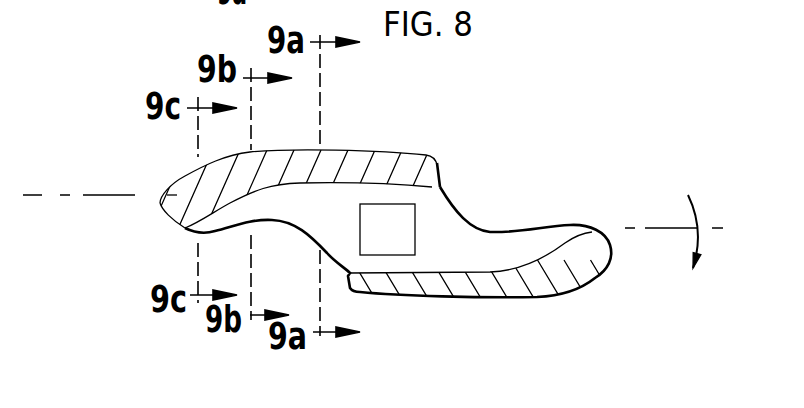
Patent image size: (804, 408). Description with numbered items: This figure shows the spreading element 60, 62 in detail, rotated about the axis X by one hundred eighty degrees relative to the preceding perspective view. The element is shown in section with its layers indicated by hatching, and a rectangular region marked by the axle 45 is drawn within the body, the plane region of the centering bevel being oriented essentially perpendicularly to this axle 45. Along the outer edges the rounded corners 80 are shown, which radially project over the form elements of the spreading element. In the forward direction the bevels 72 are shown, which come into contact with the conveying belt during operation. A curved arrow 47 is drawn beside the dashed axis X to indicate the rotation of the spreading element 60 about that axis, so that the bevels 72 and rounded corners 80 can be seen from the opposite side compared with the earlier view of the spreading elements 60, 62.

The axle 45 is at (398, 225).
The rotation arrow about axis X 47 is at (697, 208).
The spreading element 60 is at (364, 248).
The spreading element 62 is at (180, 163).
The bevels 72 is at (175, 195).
The rounded corners 80 is at (162, 212).